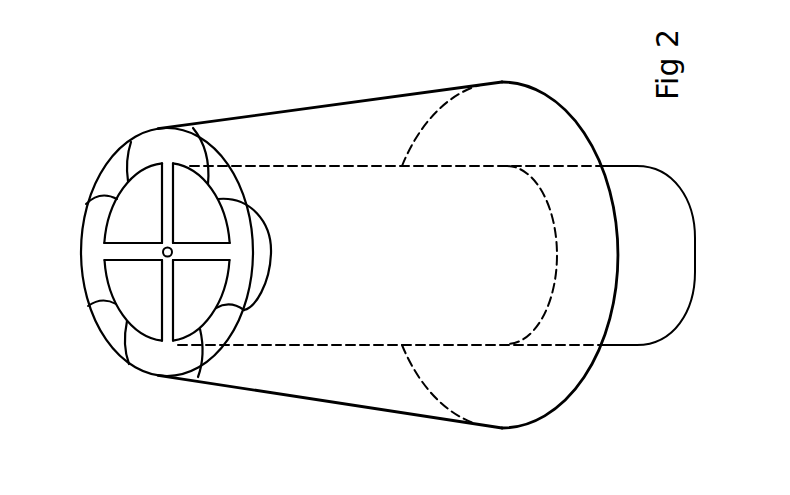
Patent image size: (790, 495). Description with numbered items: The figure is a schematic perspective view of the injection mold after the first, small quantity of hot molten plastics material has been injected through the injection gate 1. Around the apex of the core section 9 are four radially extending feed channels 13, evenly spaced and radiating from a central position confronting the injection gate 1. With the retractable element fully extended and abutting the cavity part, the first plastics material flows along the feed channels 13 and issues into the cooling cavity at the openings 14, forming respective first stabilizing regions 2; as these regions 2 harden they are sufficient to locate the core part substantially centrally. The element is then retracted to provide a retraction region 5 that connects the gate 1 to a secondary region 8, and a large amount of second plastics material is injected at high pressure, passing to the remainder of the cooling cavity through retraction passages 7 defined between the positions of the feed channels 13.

The injection gate 1 is at (163, 247).
The first stabilizing regions 2 is at (163, 133).
The retraction region 5 is at (197, 223).
The retraction passages 7 is at (205, 178).
The secondary region 8 is at (272, 140).
The core section 9 is at (187, 213).
The feed channels 13 is at (132, 250).
The openings 14 is at (102, 252).